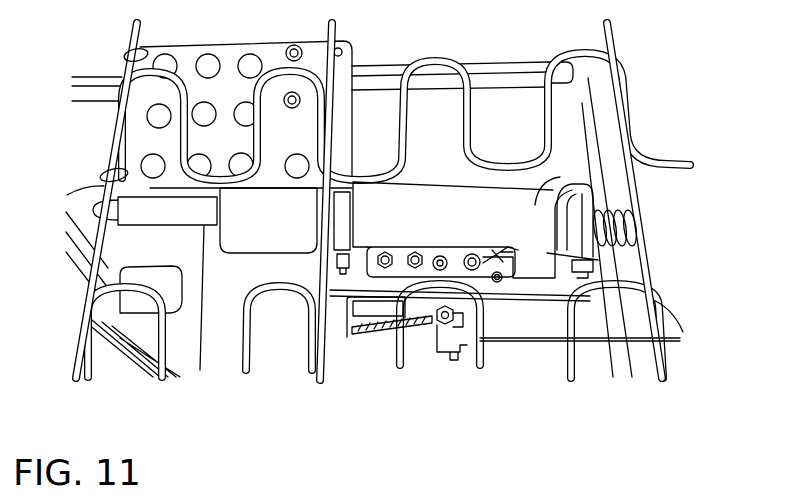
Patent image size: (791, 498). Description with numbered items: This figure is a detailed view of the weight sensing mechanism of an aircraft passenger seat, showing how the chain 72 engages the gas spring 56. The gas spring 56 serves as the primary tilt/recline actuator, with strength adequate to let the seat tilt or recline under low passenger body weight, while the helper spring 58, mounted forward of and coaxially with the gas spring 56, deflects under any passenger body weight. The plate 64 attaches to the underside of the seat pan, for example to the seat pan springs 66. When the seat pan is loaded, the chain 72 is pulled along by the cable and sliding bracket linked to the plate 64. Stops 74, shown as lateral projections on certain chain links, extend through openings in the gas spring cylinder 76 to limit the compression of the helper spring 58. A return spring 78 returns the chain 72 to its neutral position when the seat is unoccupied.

The plate 64 is at (253, 47).
The seat pan springs 66 is at (240, 256).
The gas spring 56 is at (297, 233).
The gas spring cylinder 76 is at (538, 200).
The stops 74 is at (495, 263).
The chain 72 is at (485, 268).
The return spring 78 is at (367, 334).
The helper spring 58 is at (621, 210).